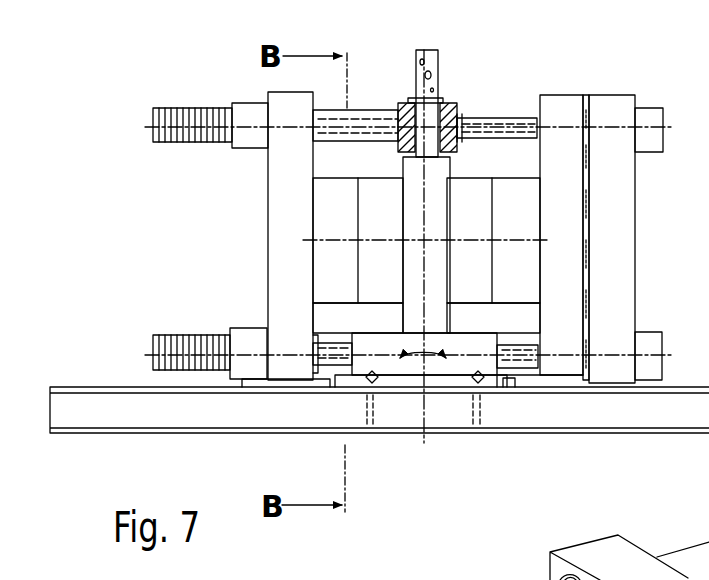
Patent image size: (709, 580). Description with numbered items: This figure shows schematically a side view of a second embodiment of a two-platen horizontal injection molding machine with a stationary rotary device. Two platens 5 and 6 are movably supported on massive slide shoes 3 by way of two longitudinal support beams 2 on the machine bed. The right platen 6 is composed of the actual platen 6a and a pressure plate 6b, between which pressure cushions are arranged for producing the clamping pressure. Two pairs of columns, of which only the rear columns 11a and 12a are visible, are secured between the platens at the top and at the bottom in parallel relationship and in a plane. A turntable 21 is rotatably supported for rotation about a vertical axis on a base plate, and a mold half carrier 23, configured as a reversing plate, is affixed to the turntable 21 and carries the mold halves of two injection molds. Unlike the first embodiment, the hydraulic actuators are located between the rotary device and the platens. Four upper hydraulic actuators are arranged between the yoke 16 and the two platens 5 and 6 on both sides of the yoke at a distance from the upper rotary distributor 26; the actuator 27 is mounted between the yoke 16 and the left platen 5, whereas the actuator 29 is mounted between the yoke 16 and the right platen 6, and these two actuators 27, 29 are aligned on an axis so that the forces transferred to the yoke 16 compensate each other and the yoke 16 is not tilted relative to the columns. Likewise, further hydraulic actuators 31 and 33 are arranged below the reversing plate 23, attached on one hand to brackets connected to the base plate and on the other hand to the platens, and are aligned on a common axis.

The longitudinal support beam 2 is at (107, 413).
The slide shoe 3 is at (258, 383).
The platen 5 is at (310, 217).
The platen 6 is at (599, 216).
The actual platen 6a is at (582, 219).
The pressure plate 6b is at (624, 198).
The column 11a is at (345, 125).
The column 12a is at (345, 366).
The yoke 16 is at (403, 98).
The turntable 21 is at (460, 340).
The mold half carrier 23 is at (410, 314).
The upper rotary distributor 26 is at (443, 71).
The hydraulic actuator 27 is at (348, 132).
The hydraulic actuator 29 is at (483, 138).
The hydraulic actuator 31 is at (333, 365).
The hydraulic actuator 33 is at (513, 365).